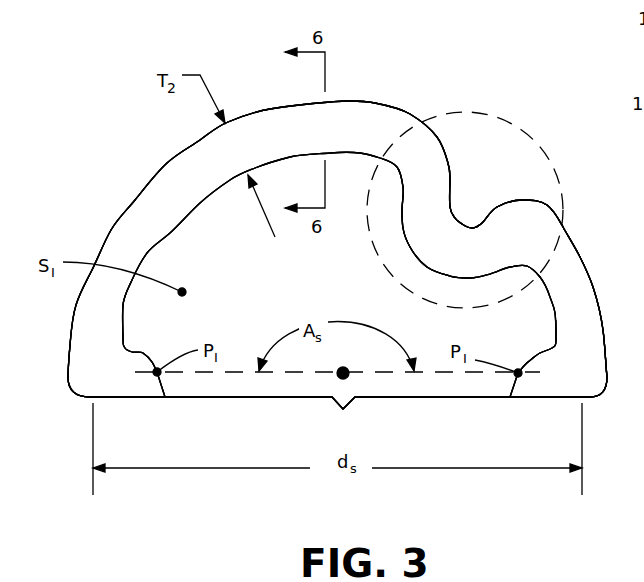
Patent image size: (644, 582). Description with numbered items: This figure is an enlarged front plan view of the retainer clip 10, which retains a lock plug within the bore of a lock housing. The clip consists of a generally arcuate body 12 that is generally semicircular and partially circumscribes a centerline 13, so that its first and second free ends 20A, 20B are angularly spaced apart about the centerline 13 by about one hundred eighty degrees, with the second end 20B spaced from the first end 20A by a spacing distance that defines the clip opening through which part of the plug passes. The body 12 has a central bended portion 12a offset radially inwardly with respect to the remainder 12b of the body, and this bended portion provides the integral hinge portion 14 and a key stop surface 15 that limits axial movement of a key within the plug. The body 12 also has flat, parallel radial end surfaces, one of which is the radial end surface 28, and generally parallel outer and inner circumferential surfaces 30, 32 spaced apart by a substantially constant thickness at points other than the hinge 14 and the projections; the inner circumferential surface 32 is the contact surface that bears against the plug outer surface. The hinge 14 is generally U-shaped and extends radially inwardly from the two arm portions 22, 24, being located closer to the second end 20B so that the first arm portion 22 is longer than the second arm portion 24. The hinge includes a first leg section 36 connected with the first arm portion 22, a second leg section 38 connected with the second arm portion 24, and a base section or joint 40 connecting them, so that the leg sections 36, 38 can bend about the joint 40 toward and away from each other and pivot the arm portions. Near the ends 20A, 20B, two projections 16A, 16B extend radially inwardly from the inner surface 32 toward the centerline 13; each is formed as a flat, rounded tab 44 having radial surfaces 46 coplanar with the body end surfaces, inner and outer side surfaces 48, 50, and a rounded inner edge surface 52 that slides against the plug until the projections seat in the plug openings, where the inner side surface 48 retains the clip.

The retainer clip 10 is at (177, 37).
The arcuate body 12 is at (105, 195).
The central bended portion 12a is at (475, 175).
The remainder of the body 12b is at (110, 228).
The centerline 13 is at (349, 377).
The hinge portion 14 is at (450, 172).
The key stop surface 15 is at (477, 220).
The first projection 16A is at (168, 400).
The second projection 16B is at (513, 402).
The first free end 20A is at (97, 380).
The second free end 20B is at (582, 385).
The first arm portion 22 is at (177, 180).
The second arm portion 24 is at (573, 290).
The second radial end surface 28 is at (292, 145).
The outer circumferential surface 30 is at (370, 103).
The inner circumferential surface 32 is at (170, 235).
The first leg section 36 is at (418, 200).
The second leg section 38 is at (536, 270).
The base section or joint 40 is at (438, 247).
The tab 44 is at (143, 388).
The radial surface 46 is at (125, 368).
The inner side surface 48 is at (128, 343).
The outer side surface 50 is at (132, 397).
The rounded inner edge surface 52 is at (157, 367).